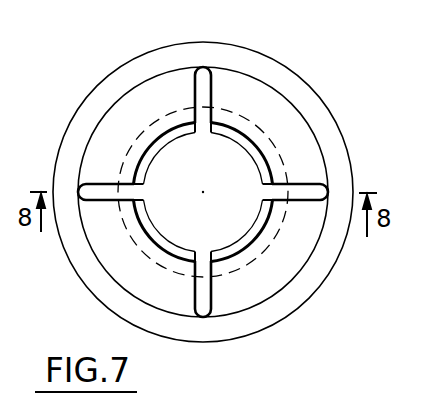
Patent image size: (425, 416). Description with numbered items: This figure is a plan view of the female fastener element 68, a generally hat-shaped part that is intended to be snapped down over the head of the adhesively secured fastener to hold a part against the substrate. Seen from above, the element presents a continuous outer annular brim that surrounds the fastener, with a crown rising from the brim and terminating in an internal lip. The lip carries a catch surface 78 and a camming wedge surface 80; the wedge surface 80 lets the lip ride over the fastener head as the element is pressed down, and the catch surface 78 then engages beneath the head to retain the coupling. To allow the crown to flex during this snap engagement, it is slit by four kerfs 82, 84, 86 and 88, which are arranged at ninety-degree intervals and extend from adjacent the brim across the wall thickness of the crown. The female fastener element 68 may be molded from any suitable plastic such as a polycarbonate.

The female fastener element 68 is at (119, 64).
The catch surface 78 is at (252, 243).
The camming wedge surface 80 is at (130, 235).
The kerf 82 is at (208, 90).
The kerf 84 is at (80, 183).
The kerf 86 is at (211, 306).
The kerf 88 is at (297, 184).